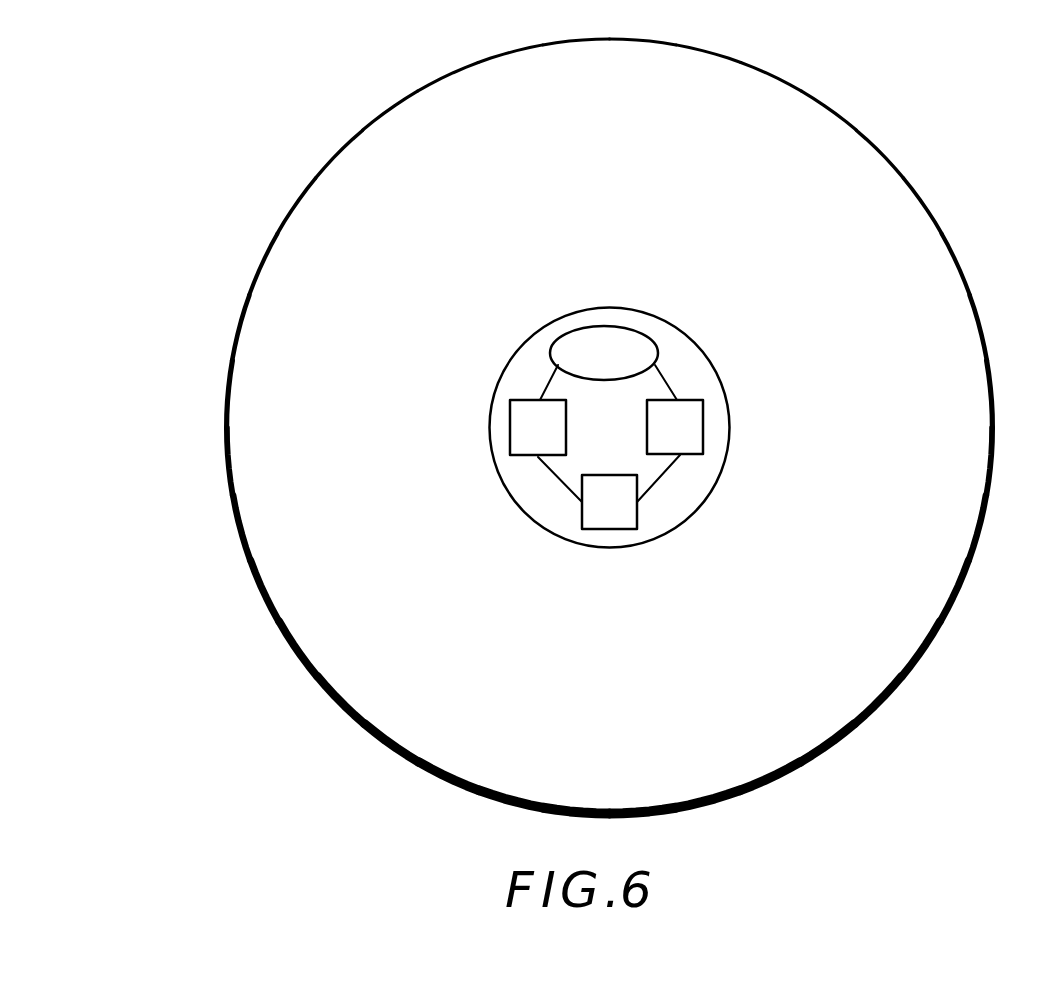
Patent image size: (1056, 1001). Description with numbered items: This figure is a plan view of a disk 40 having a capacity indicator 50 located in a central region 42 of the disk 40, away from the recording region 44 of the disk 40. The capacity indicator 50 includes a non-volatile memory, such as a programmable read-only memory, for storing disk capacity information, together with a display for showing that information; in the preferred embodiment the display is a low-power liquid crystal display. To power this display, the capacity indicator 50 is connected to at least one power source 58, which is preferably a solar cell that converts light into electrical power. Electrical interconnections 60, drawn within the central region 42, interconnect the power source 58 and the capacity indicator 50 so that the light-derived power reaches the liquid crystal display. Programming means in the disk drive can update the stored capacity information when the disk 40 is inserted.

The disk 40 is at (597, 426).
The central region 42 is at (518, 367).
The recording region 44 is at (975, 347).
The capacity indicator 50 is at (603, 348).
The power source 58 is at (693, 423).
The electrical interconnections 60 is at (662, 473).